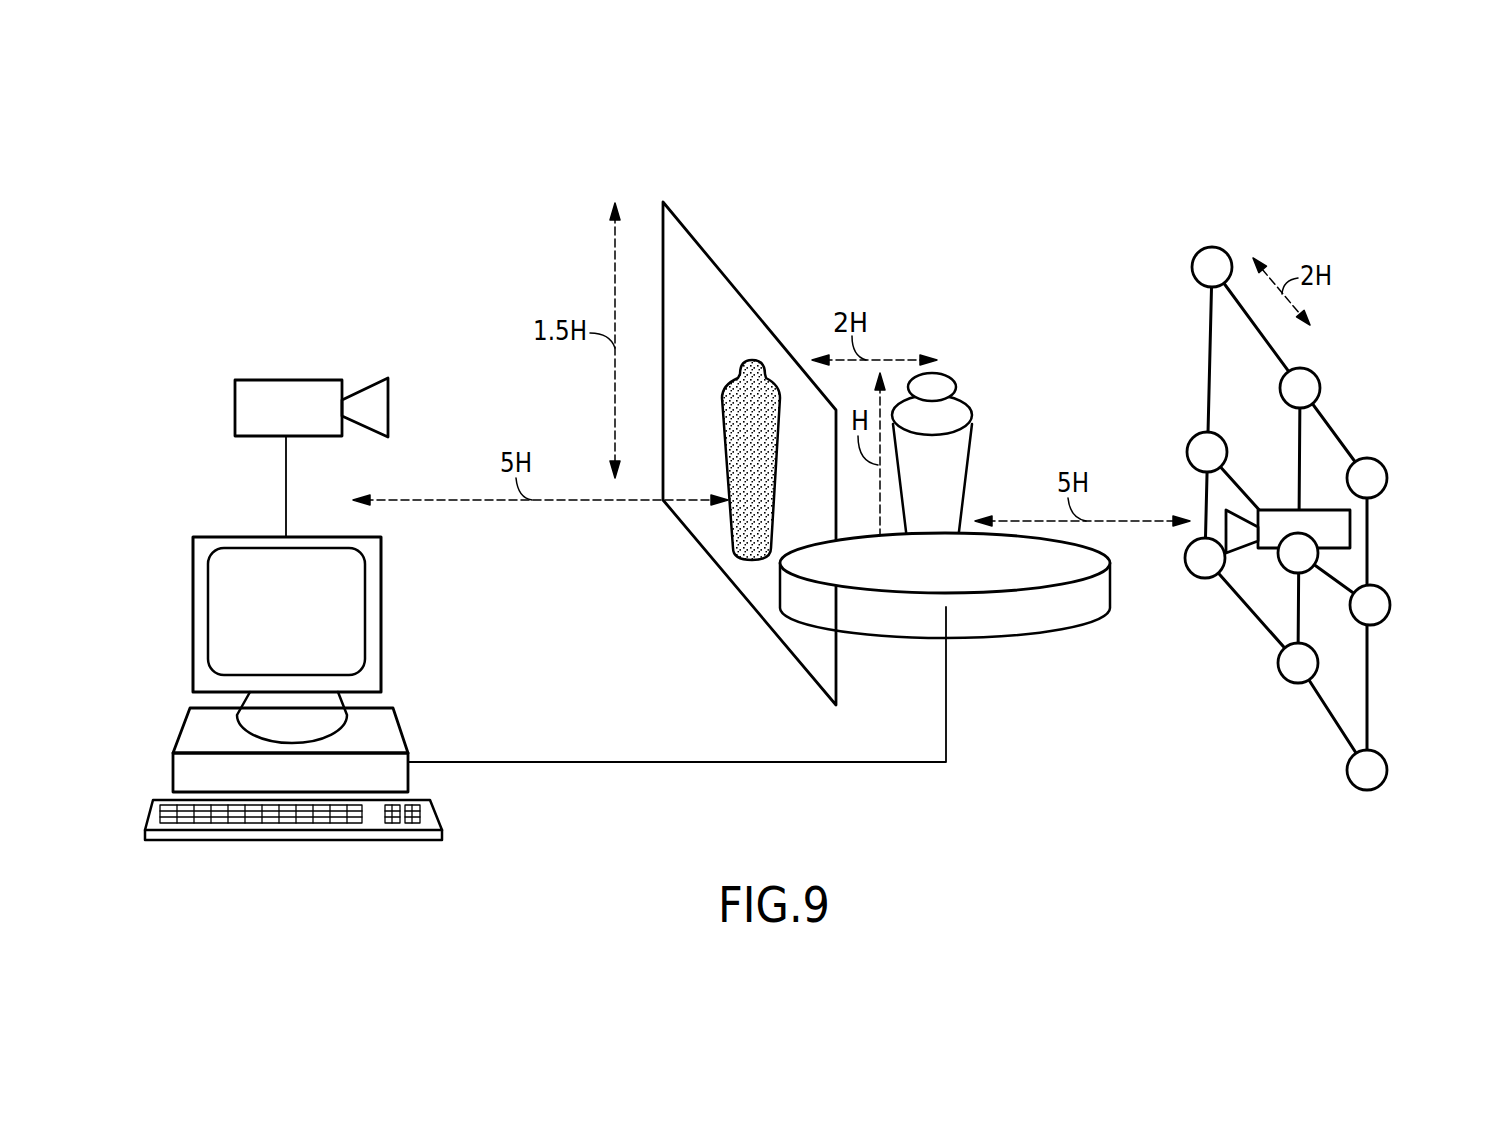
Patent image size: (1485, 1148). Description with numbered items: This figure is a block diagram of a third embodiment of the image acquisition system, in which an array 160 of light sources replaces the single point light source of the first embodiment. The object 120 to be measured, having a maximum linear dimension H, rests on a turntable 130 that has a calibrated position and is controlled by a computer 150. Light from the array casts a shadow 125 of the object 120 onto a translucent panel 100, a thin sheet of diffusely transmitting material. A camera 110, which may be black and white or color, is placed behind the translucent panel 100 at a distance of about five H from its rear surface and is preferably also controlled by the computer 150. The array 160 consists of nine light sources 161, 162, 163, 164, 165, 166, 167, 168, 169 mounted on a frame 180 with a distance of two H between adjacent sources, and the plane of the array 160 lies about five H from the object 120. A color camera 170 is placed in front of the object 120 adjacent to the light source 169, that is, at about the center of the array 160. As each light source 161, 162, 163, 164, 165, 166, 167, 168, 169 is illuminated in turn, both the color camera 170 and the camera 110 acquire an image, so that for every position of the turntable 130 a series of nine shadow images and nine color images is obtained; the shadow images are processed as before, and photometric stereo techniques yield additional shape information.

The translucent panel 100 is at (688, 232).
The camera 110 is at (276, 380).
The object 120 is at (1008, 305).
The shadow 125 is at (757, 360).
The turntable 130 is at (1013, 636).
The computer 150 is at (381, 572).
The array of light sources 160 is at (1278, 487).
The light source 161 is at (1228, 252).
The light source 162 is at (1318, 372).
The light source 163 is at (1384, 464).
The light source 164 is at (1388, 614).
The light source 165 is at (1385, 782).
The light source 166 is at (1283, 680).
The light source 167 is at (1196, 576).
The light source 168 is at (1192, 440).
The light source 169 is at (1306, 574).
The color camera 170 is at (1350, 530).
The frame 180 is at (1320, 712).